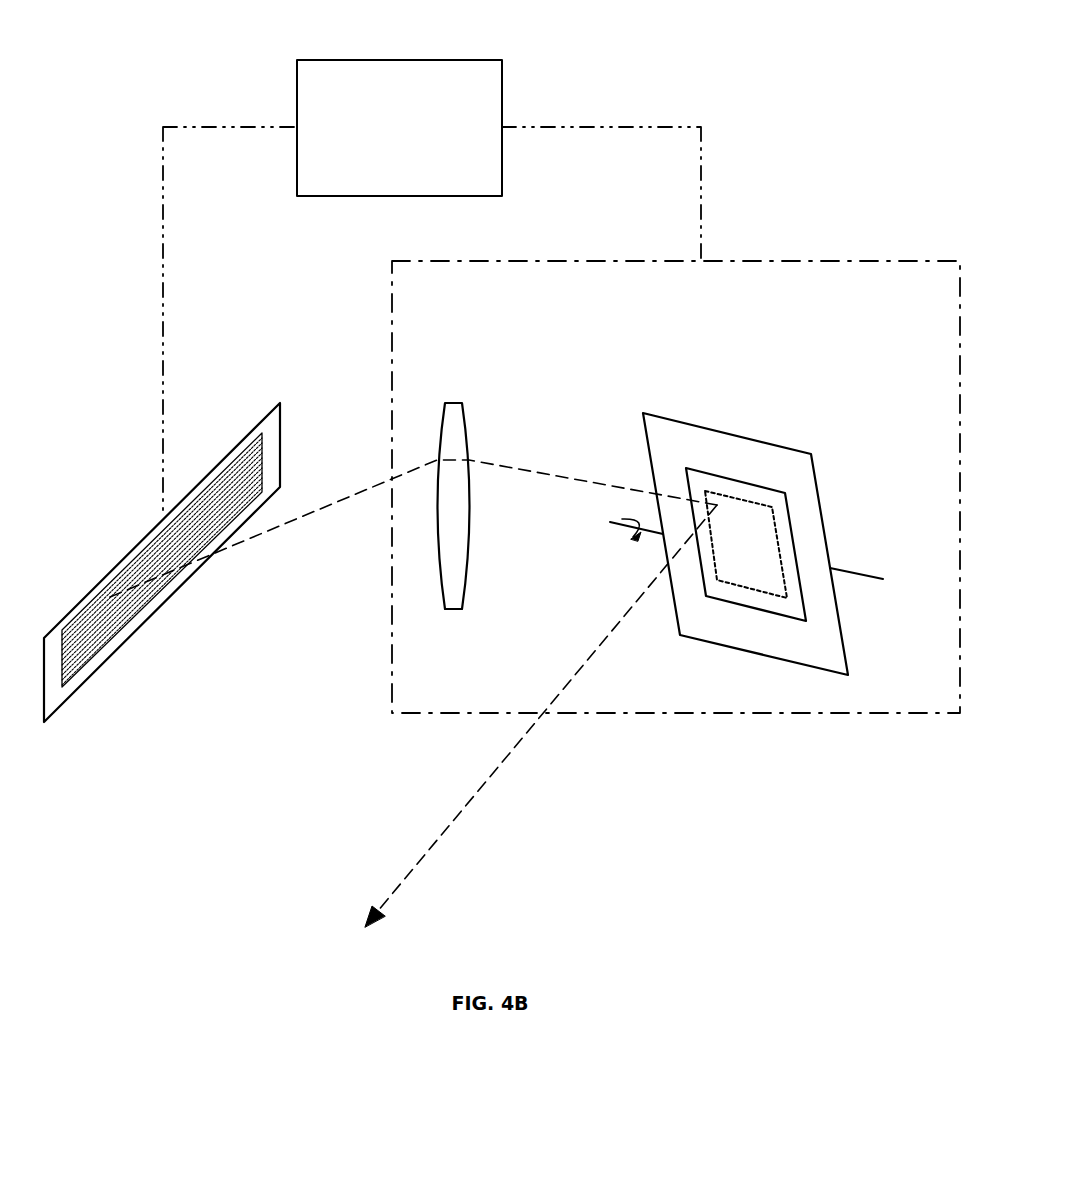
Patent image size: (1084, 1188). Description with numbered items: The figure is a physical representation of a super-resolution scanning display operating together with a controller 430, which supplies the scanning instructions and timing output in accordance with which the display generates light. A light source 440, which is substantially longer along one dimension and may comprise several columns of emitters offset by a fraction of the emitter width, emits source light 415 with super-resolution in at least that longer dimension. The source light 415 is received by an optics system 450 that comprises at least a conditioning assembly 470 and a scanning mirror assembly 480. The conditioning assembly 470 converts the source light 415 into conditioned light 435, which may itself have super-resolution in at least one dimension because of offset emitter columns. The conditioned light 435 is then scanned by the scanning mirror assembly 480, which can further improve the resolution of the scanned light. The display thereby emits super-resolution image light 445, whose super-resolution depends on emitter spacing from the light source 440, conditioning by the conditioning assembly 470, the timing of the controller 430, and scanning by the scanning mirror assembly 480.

The source light 415 is at (338, 503).
The controller 430 is at (382, 152).
The conditioned light 435 is at (552, 483).
The light source 440 is at (57, 703).
The super-resolution image light 445 is at (513, 763).
The optics system 450 is at (428, 352).
The conditioning assembly 470 is at (463, 404).
The scanning mirror assembly 480 is at (811, 454).